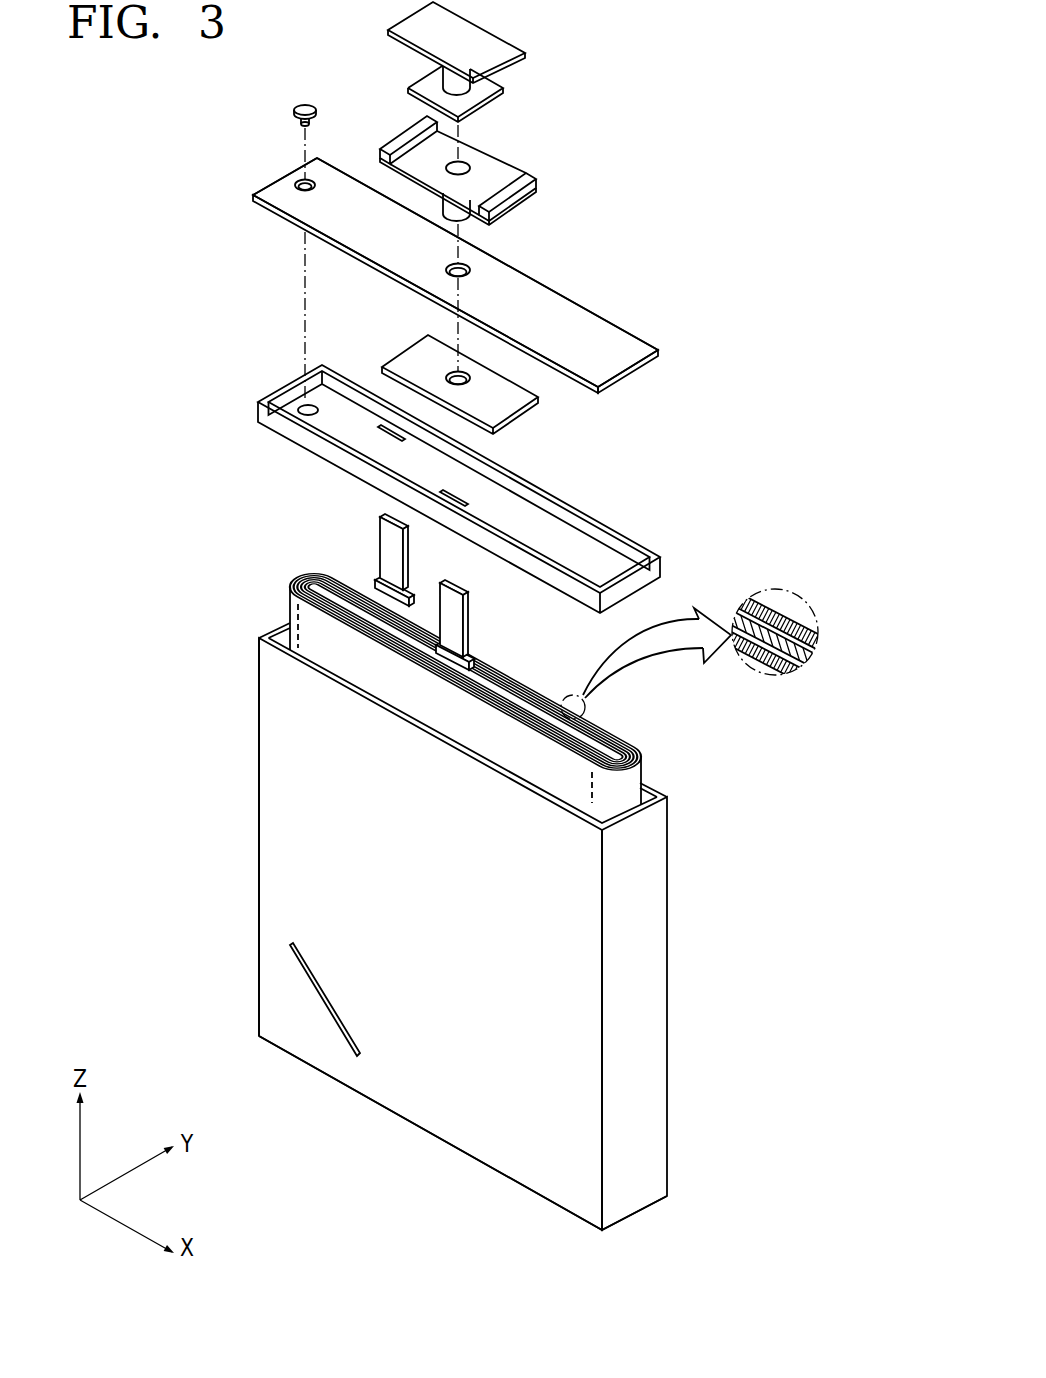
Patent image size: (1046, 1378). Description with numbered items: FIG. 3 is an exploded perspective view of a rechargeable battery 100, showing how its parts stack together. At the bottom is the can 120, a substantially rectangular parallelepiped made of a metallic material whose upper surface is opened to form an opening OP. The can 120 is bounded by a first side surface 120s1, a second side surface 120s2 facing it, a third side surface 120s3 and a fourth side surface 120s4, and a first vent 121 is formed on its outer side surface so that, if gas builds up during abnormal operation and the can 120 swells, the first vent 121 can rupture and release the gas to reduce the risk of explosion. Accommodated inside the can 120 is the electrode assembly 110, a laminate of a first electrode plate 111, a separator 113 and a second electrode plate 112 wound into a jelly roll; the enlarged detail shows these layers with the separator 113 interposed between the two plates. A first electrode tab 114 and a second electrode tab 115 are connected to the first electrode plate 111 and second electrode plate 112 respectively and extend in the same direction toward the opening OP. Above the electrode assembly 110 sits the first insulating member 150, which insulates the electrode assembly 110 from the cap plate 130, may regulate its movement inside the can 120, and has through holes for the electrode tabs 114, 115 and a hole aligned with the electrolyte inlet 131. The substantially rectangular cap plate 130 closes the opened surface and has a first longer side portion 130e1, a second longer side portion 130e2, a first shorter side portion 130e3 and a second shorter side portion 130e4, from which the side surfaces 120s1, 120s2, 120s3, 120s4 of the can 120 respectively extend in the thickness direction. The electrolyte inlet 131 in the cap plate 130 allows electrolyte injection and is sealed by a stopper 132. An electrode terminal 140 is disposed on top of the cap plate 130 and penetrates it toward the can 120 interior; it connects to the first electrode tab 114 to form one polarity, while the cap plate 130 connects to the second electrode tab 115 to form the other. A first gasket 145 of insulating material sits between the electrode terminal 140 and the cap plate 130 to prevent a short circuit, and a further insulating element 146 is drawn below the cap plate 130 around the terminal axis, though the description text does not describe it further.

The rechargeable battery 100 is at (720, 80).
The electrode assembly 110 is at (508, 659).
The first electrode plate 111 is at (805, 669).
The second electrode plate 112 is at (818, 637).
The separator 113 is at (812, 652).
The first electrode tab 114 is at (466, 634).
The second electrode tab 115 is at (386, 546).
The can 120 is at (450, 893).
The first side surface 120s1 is at (462, 1113).
The second side surface 120s2 is at (650, 796).
The third side surface 120s3 is at (258, 996).
The fourth side surface 120s4 is at (635, 1198).
The first vent 121 is at (344, 1040).
The cap plate 130 is at (414, 278).
The first longer side portion 130e1 is at (297, 225).
The second longer side portion 130e2 is at (525, 272).
The first shorter side portion 130e3 is at (262, 188).
The second shorter side portion 130e4 is at (620, 373).
The electrolyte inlet 131 is at (303, 184).
The stopper 132 is at (300, 104).
The electrode terminal 140 is at (498, 49).
The first gasket 145 is at (523, 178).
The lower insulating member 146 is at (410, 358).
The first insulating member 150 is at (660, 567).
The opening OP is at (280, 627).